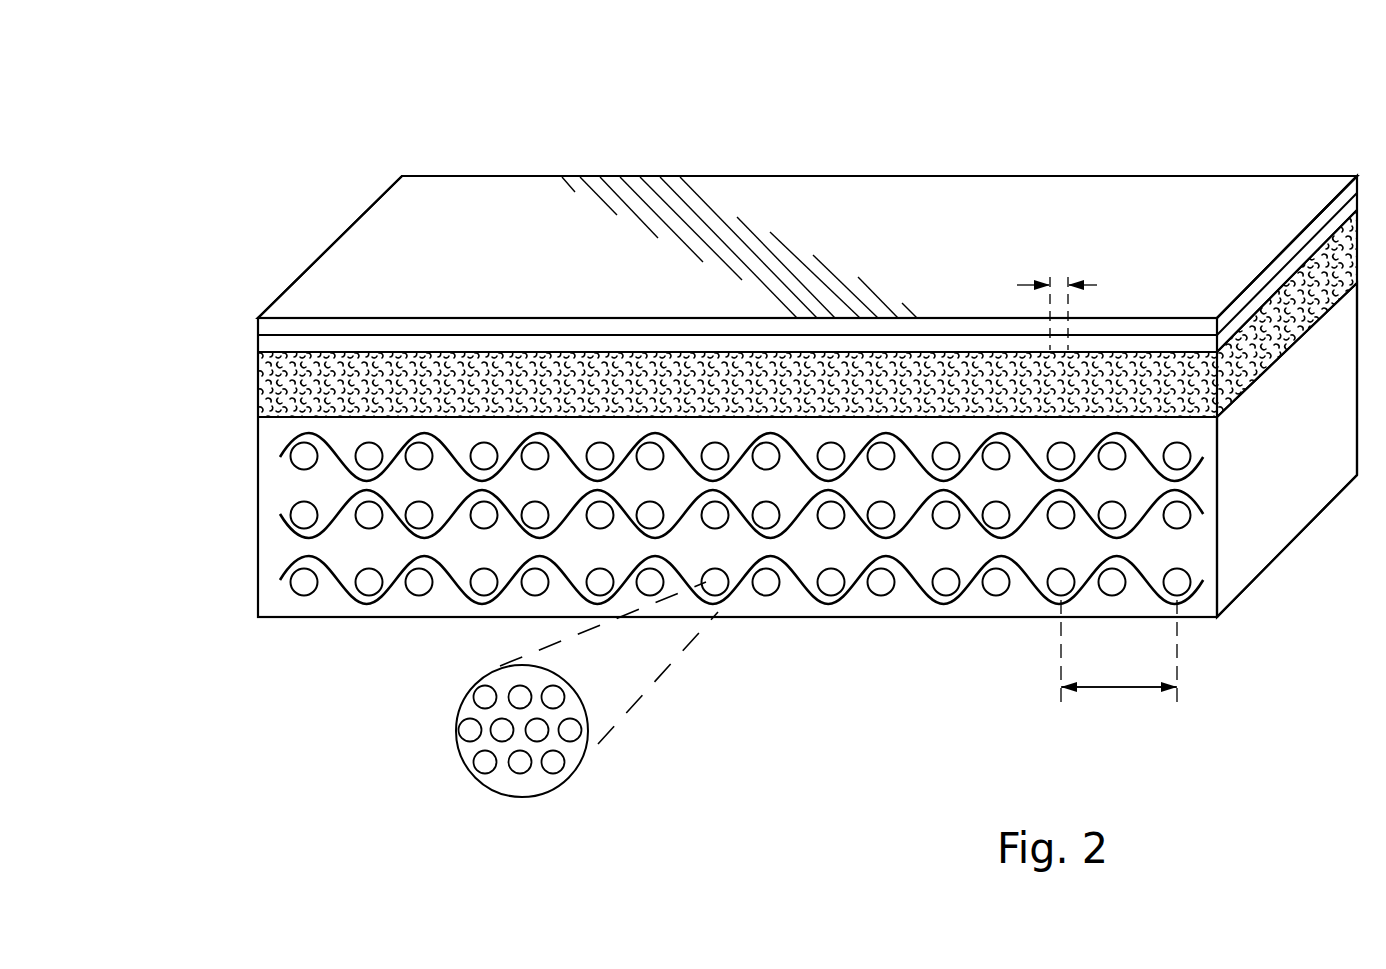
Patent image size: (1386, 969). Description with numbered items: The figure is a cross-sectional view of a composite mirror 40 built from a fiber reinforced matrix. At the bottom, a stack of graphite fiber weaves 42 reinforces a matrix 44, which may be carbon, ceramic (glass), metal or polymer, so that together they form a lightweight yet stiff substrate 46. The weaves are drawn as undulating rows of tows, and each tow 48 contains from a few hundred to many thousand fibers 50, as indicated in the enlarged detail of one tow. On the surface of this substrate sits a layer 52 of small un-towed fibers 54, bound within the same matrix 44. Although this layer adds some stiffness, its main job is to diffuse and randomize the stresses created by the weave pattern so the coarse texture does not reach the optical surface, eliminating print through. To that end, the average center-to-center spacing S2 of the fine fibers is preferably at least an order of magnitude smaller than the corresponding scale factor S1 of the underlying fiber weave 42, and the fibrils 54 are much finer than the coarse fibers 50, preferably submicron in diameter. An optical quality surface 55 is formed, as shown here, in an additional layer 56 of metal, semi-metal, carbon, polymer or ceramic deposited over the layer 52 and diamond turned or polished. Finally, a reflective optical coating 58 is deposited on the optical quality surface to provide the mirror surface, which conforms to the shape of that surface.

The composite mirror 40 is at (893, 127).
The graphite fiber weaves 42 is at (788, 598).
The matrix 44 is at (1274, 457).
The substrate 46 is at (675, 585).
The tow 48 is at (463, 693).
The fibers 50 is at (477, 740).
The layer of small un-towed fibers 52 is at (740, 291).
The un-towed fibers 54 is at (388, 368).
The optical quality surface 55 is at (513, 332).
The additional layer 56 is at (257, 342).
The reflective optical coating 58 is at (437, 253).
The scale factor of fiber weave S1 is at (1119, 651).
The average center-to-center spacing of fine fibers S2 is at (1057, 293).